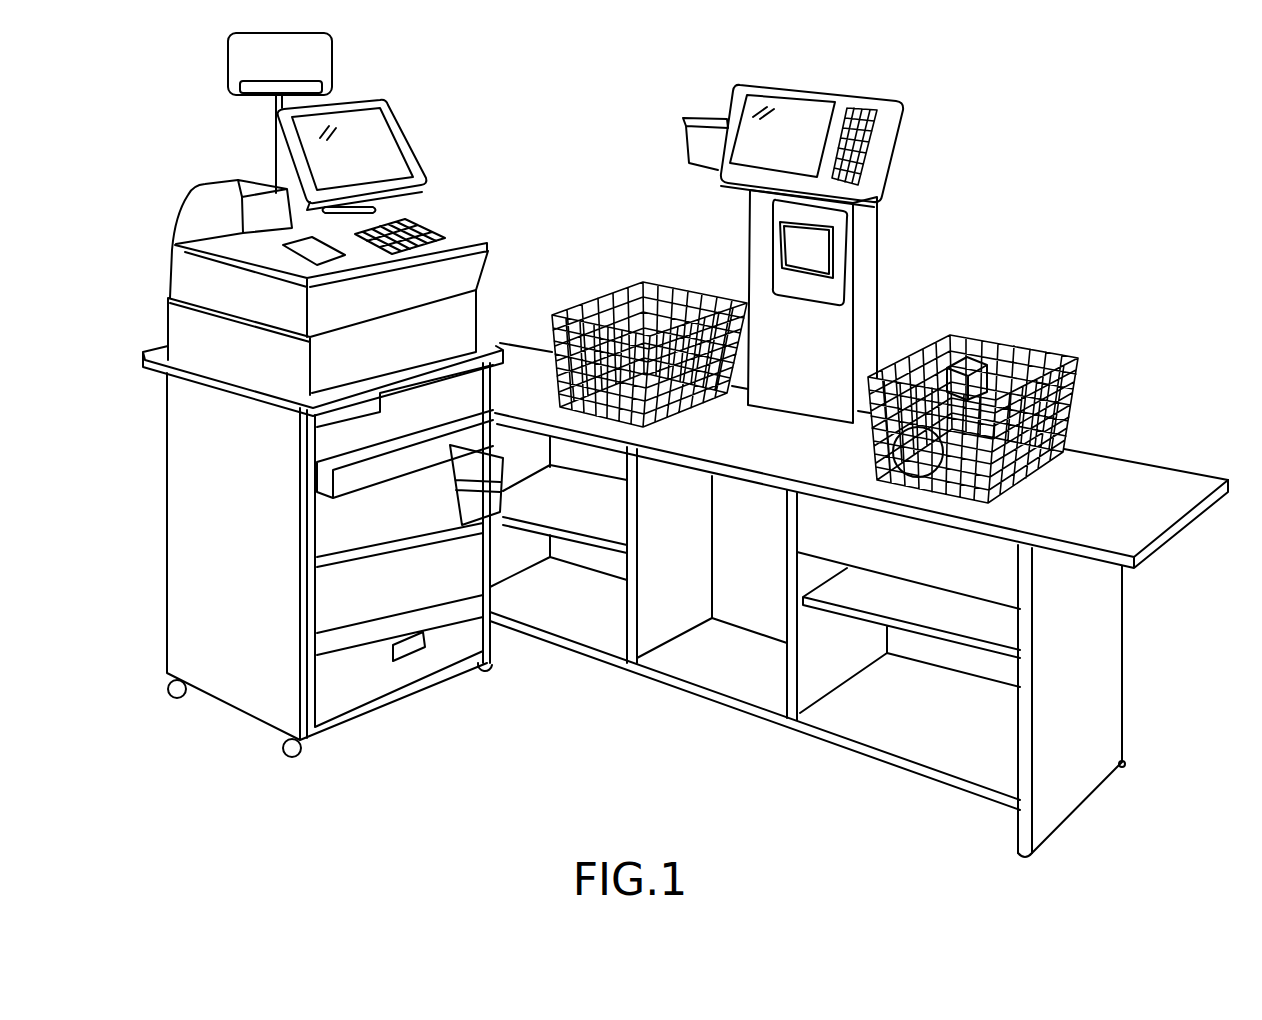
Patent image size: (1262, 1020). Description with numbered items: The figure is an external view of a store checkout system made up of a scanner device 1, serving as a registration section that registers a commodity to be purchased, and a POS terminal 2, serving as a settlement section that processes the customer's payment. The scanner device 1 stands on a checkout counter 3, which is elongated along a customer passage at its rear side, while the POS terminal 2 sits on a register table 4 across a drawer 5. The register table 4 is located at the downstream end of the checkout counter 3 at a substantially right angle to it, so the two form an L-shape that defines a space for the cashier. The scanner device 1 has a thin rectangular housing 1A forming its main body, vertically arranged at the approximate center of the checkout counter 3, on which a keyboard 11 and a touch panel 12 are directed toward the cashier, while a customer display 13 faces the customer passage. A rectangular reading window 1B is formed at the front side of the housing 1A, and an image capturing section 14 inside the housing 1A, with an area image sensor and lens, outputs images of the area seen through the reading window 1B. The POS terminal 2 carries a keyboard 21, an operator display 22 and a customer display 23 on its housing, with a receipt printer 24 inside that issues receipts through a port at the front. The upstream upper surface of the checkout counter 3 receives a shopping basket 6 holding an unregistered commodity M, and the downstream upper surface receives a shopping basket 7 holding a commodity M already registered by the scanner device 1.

The scanner device 1 is at (797, 229).
The housing 1A is at (863, 317).
The reading window 1B is at (818, 248).
The keyboard 11 is at (868, 108).
The touch panel 12 is at (798, 114).
The customer display 13 is at (697, 147).
The image capturing section 14 is at (812, 252).
The POS terminal 2 is at (317, 185).
The keyboard 21 is at (428, 226).
The operator display 22 is at (412, 128).
The customer display 23 is at (333, 58).
The receipt printer 24 is at (238, 182).
The checkout counter 3 is at (1166, 463).
The register table 4 is at (184, 498).
The drawer 5 is at (186, 327).
The shopping basket 6 is at (997, 390).
The shopping basket 7 is at (602, 298).
The commodity M is at (970, 368).